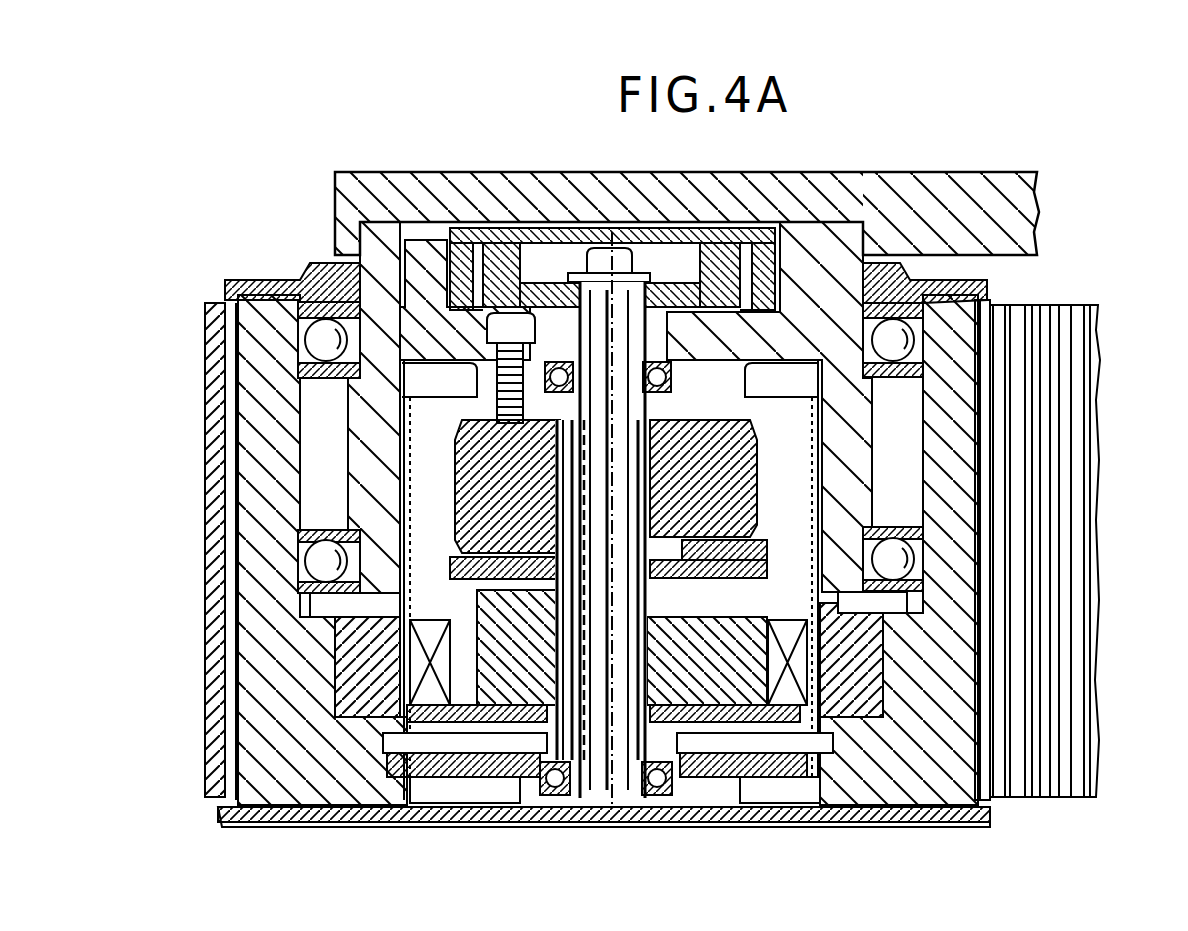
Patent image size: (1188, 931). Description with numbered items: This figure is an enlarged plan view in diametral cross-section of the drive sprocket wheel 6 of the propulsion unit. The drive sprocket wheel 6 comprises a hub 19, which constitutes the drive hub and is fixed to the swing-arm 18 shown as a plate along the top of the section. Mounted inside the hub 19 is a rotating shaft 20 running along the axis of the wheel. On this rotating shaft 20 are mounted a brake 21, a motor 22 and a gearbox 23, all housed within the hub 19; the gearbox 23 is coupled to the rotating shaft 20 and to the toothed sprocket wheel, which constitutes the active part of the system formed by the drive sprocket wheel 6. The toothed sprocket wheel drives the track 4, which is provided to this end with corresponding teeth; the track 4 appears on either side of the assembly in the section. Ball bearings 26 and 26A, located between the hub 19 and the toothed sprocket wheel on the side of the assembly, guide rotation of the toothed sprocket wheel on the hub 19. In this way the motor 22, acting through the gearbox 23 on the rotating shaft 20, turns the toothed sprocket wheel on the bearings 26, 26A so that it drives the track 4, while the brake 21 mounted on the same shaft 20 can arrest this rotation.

The track 4 is at (207, 484).
The drive sprocket wheel 6 is at (1072, 268).
The swing-arm 18 is at (928, 198).
The hub 19 is at (385, 272).
The rotating shaft 20 is at (622, 680).
The brake 21 is at (510, 490).
The motor 22 is at (462, 232).
The gearbox 23 is at (482, 680).
The ball bearing 26 is at (320, 562).
The ball bearing 26A is at (318, 342).